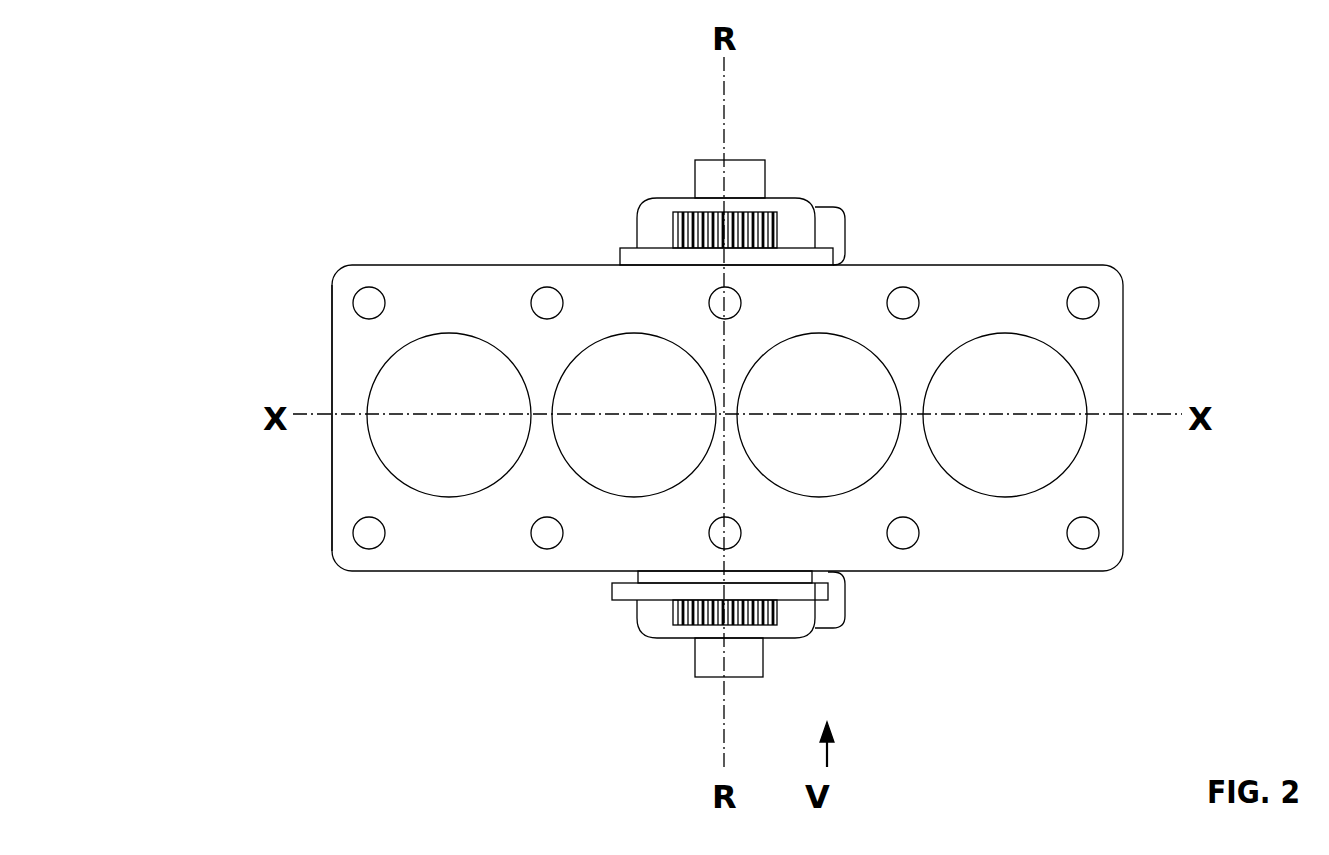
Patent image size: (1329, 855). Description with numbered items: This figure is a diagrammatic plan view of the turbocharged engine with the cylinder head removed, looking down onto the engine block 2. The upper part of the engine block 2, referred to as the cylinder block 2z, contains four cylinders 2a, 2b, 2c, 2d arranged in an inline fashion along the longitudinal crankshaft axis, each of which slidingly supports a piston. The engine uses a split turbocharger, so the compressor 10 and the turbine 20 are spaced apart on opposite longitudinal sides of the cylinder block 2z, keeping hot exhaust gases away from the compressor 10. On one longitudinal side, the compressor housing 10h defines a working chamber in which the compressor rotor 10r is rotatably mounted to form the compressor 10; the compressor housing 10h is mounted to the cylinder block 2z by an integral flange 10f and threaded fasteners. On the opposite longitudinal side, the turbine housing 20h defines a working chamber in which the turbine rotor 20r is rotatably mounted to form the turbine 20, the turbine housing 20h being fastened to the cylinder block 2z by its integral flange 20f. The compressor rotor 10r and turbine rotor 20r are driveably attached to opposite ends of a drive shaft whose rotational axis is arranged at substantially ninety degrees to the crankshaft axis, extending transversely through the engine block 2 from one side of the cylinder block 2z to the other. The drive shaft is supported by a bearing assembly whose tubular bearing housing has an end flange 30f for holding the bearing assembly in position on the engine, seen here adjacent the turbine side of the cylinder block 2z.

The engine block 2 is at (640, 345).
The cylinder block 2z is at (332, 337).
The cylinder 2a is at (470, 437).
The cylinder 2b is at (657, 437).
The cylinder 2c is at (841, 437).
The cylinder 2d is at (1029, 437).
The compressor 10 is at (667, 193).
The compressor housing 10h is at (637, 238).
The integral flange 10f is at (620, 248).
The compressor rotor 10r is at (672, 212).
The turbine 20 is at (726, 643).
The turbine housing 20h is at (637, 608).
The integral flange 20f is at (843, 603).
The turbine rotor 20r is at (668, 601).
The end flange 30f is at (640, 582).